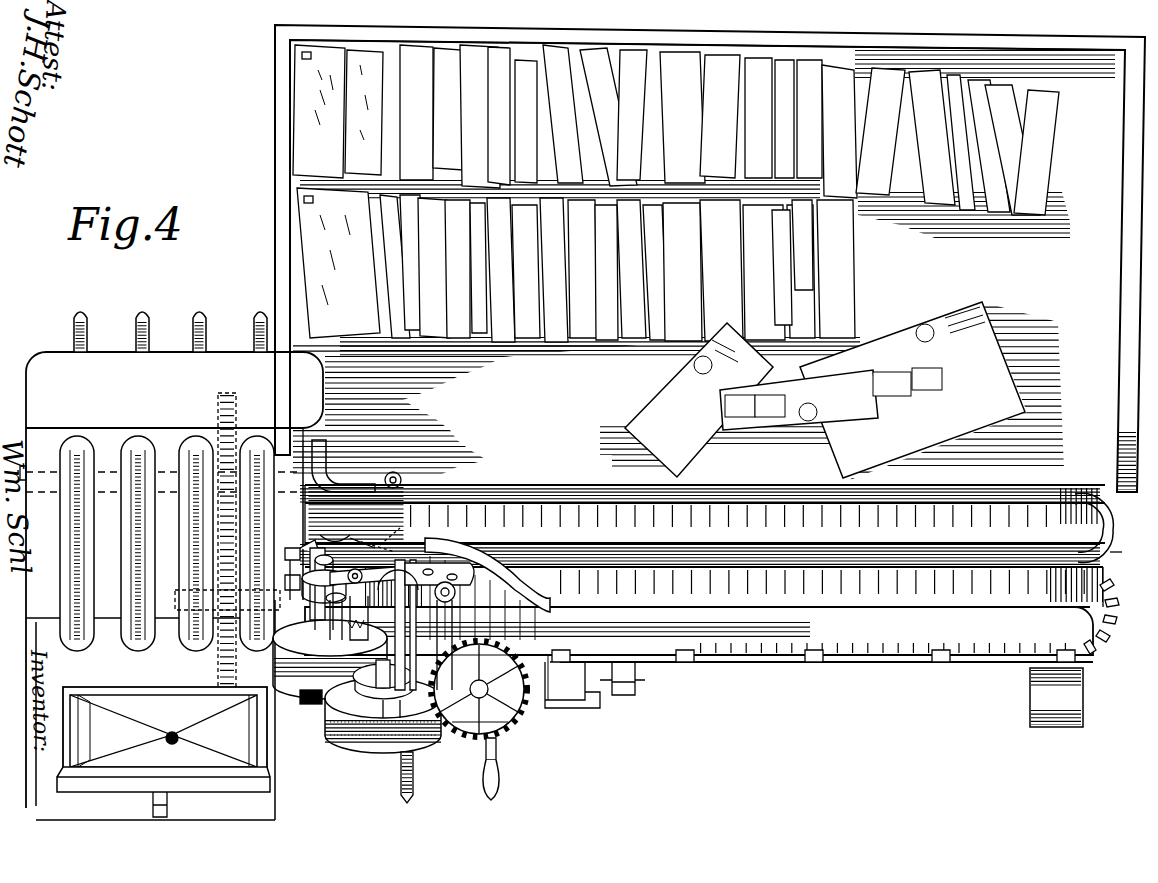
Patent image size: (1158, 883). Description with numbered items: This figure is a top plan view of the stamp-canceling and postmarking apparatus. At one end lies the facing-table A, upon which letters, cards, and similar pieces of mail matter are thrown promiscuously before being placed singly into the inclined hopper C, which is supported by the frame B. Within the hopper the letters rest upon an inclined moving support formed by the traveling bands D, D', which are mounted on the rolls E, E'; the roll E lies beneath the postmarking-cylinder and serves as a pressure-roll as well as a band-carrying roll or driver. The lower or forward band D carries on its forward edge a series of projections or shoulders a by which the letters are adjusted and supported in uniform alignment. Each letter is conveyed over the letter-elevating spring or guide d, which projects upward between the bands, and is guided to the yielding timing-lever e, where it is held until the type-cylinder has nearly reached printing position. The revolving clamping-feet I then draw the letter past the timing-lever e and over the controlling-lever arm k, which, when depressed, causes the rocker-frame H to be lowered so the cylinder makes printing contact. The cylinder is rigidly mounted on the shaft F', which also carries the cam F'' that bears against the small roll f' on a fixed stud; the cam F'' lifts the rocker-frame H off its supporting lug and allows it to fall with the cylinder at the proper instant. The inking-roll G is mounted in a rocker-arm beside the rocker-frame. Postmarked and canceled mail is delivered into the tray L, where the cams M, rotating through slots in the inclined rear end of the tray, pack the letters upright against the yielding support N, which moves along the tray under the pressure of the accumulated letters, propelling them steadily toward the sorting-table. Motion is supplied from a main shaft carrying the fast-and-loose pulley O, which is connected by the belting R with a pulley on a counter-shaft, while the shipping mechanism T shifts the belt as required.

The facing-table A is at (262, 222).
The cams M is at (222, 307).
The tray L is at (171, 586).
The roll E is at (356, 466).
The traveling band D' is at (705, 515).
The traveling band D is at (704, 575).
The inclined hopper C is at (980, 630).
The roll E' is at (1109, 530).
The projections or shoulders a is at (1112, 616).
The frame B is at (268, 705).
The belting R is at (595, 685).
The fast-and-loose pulley O is at (535, 677).
The clamping-feet I is at (229, 546).
The yielding support N is at (214, 800).
The cam F'' is at (298, 566).
The shaft F' is at (334, 627).
The small roll f' is at (361, 626).
The controlling-lever arm k is at (335, 526).
The timing-lever e is at (362, 529).
The letter-elevating spring or guide d is at (378, 529).
The inking-roll G is at (370, 706).
The rocker-frame H is at (395, 795).
The gear wheel q' is at (479, 689).
The shipping mechanism T is at (502, 769).